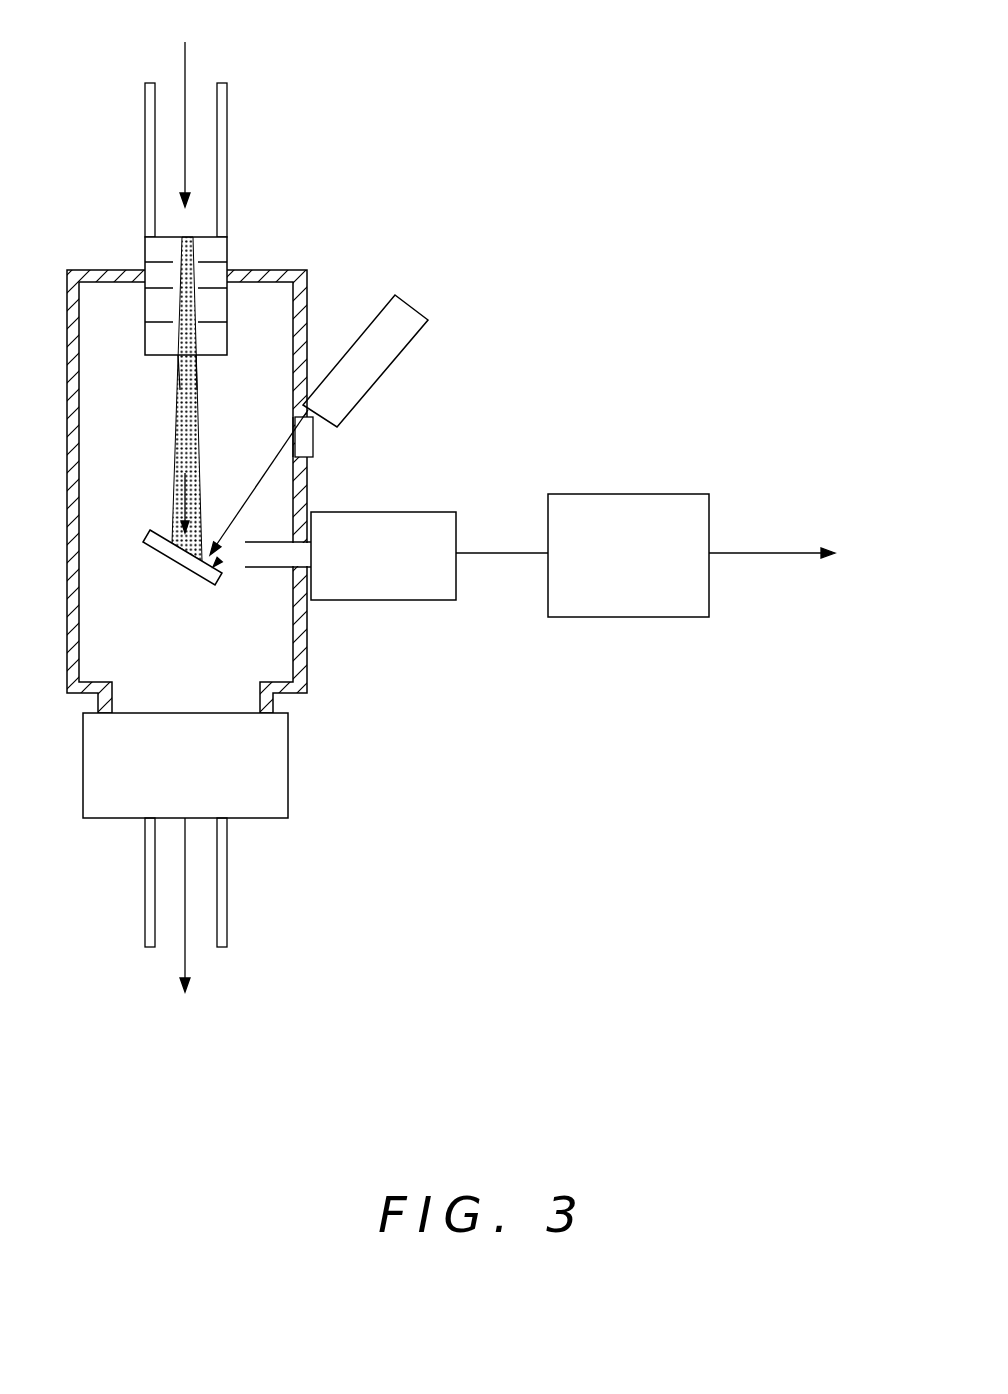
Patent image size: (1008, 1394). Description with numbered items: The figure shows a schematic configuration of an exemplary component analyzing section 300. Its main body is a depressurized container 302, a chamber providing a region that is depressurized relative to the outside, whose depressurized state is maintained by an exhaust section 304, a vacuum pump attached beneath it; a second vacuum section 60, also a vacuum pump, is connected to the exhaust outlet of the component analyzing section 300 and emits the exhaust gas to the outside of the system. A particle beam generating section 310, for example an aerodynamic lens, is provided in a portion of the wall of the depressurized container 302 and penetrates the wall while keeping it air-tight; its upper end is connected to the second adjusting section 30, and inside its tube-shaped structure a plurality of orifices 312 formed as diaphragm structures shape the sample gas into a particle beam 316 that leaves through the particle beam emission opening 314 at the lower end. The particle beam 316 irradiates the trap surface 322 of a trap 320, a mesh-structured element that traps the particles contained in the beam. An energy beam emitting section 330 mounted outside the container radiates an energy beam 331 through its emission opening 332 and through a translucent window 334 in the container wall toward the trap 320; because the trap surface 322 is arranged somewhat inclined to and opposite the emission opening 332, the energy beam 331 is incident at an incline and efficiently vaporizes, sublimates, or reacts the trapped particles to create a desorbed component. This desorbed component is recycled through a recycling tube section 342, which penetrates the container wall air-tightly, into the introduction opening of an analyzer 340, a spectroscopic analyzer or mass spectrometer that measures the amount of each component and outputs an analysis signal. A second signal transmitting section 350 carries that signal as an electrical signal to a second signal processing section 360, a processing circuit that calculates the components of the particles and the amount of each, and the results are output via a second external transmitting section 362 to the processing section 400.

The second adjusting section 30 is at (185, 107).
The second vacuum section 60 is at (186, 923).
The component analyzing section 300 is at (512, 1102).
The depressurized container 302 is at (110, 270).
The exhaust section 304 is at (288, 768).
The particle beam generating section 310 is at (228, 252).
The orifices 312 is at (160, 323).
The particle beam emission opening 314 is at (175, 357).
The particle beam 316 is at (200, 408).
The trap 320 is at (175, 573).
The trap surface 322 is at (219, 559).
The energy beam emitting section 330 is at (385, 373).
The energy beam 331 is at (255, 493).
The emission opening 332 is at (320, 417).
The translucent window 334 is at (292, 437).
The analyzer 340 is at (383, 600).
The recycling tube section 342 is at (282, 542).
The second signal transmitting section 350 is at (502, 553).
The second signal processing section 360 is at (628, 617).
The second external transmitting section 362 is at (760, 553).
The processing section 400 is at (860, 556).